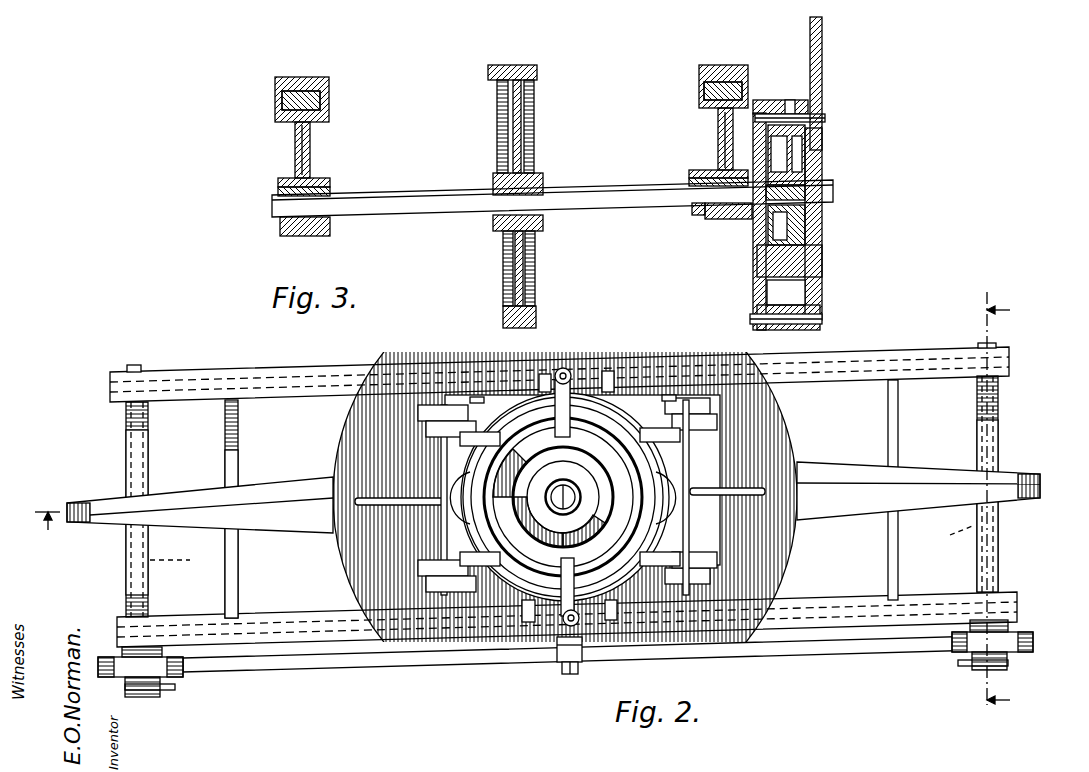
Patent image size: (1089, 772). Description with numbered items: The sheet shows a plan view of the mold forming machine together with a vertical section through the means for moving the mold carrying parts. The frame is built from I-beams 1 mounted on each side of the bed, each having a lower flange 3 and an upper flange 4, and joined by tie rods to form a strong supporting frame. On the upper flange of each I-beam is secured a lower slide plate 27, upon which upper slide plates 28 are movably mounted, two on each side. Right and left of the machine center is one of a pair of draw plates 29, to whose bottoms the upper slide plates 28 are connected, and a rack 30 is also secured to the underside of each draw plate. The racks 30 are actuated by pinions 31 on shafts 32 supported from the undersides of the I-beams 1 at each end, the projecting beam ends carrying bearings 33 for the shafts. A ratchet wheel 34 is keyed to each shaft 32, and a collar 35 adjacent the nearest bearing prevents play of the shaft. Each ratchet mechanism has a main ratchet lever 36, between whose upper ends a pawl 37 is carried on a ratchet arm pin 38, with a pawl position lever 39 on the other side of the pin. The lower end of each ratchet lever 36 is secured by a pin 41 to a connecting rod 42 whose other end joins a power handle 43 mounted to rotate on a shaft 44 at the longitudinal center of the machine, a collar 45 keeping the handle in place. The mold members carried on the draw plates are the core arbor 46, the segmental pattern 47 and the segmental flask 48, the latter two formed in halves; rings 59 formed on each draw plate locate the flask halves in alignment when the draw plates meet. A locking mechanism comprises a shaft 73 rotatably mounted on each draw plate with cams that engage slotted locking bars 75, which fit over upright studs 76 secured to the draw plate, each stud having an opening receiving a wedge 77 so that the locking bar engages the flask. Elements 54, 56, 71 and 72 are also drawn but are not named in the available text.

In FIG. 3, the I-beam 1 is at (295, 152).
In FIG. 2, the I-beam 1 is at (903, 355).
In FIG. 3, the lower flange 3 is at (330, 181).
In FIG. 2, the lower flange 3 is at (995, 489).
In FIG. 3, the upper flange 4 is at (278, 119).
In FIG. 2, the upper flange 4 is at (38, 518).
In FIG. 3, the lower slide plate 27 is at (320, 100).
In FIG. 3, the upper slide plate 28 is at (328, 83).
In FIG. 2, the draw plate 29 is at (760, 416).
In FIG. 2, the rack 30 is at (280, 496).
In FIG. 3, the pinion 31 is at (530, 68).
In FIG. 2, the pinion 31 is at (78, 506).
In FIG. 3, the shaft 32 is at (592, 198).
In FIG. 2, the shaft 32 is at (562, 552).
In FIG. 3, the bearing 33 is at (727, 221).
In FIG. 3, the ratchet wheel 34 is at (800, 237).
In FIG. 3, the collar 35 is at (696, 216).
In FIG. 3, the main ratchet lever 36 is at (820, 264).
In FIG. 2, the main ratchet lever 36 is at (150, 698).
In FIG. 3, the pawl 37 is at (779, 108).
In FIG. 2, the pawl 37 is at (115, 678).
In FIG. 3, the ratchet arm pin 38 is at (822, 118).
In FIG. 3, the pawl position lever 39 is at (822, 58).
In FIG. 2, the pawl position lever 39 is at (500, 400).
In FIG. 3, the pin 41 is at (822, 315).
In FIG. 2, the connecting rod 42 is at (600, 666).
In FIG. 2, the power handle 43 is at (562, 655).
In FIG. 2, the shaft 44 is at (568, 676).
In FIG. 2, the collar 45 is at (580, 668).
In FIG. 2, the core arbor 46 is at (563, 497).
In FIG. 2, the segmental pattern 47 is at (700, 456).
In FIG. 2, the segmental flask 48 is at (560, 497).
In FIG. 2, the bolt 54 is at (542, 382).
In FIG. 2, the strap bolt 56 is at (566, 368).
In FIG. 2, the ring 59 is at (640, 405).
In FIG. 2, the clip 71 is at (676, 398).
In FIG. 2, the clamp plate 72 is at (418, 412).
In FIG. 2, the shaft 73 is at (441, 448).
In FIG. 2, the slotted locking bar 75 is at (448, 420).
In FIG. 2, the upright stud 76 is at (478, 432).
In FIG. 2, the wedge 77 is at (470, 570).